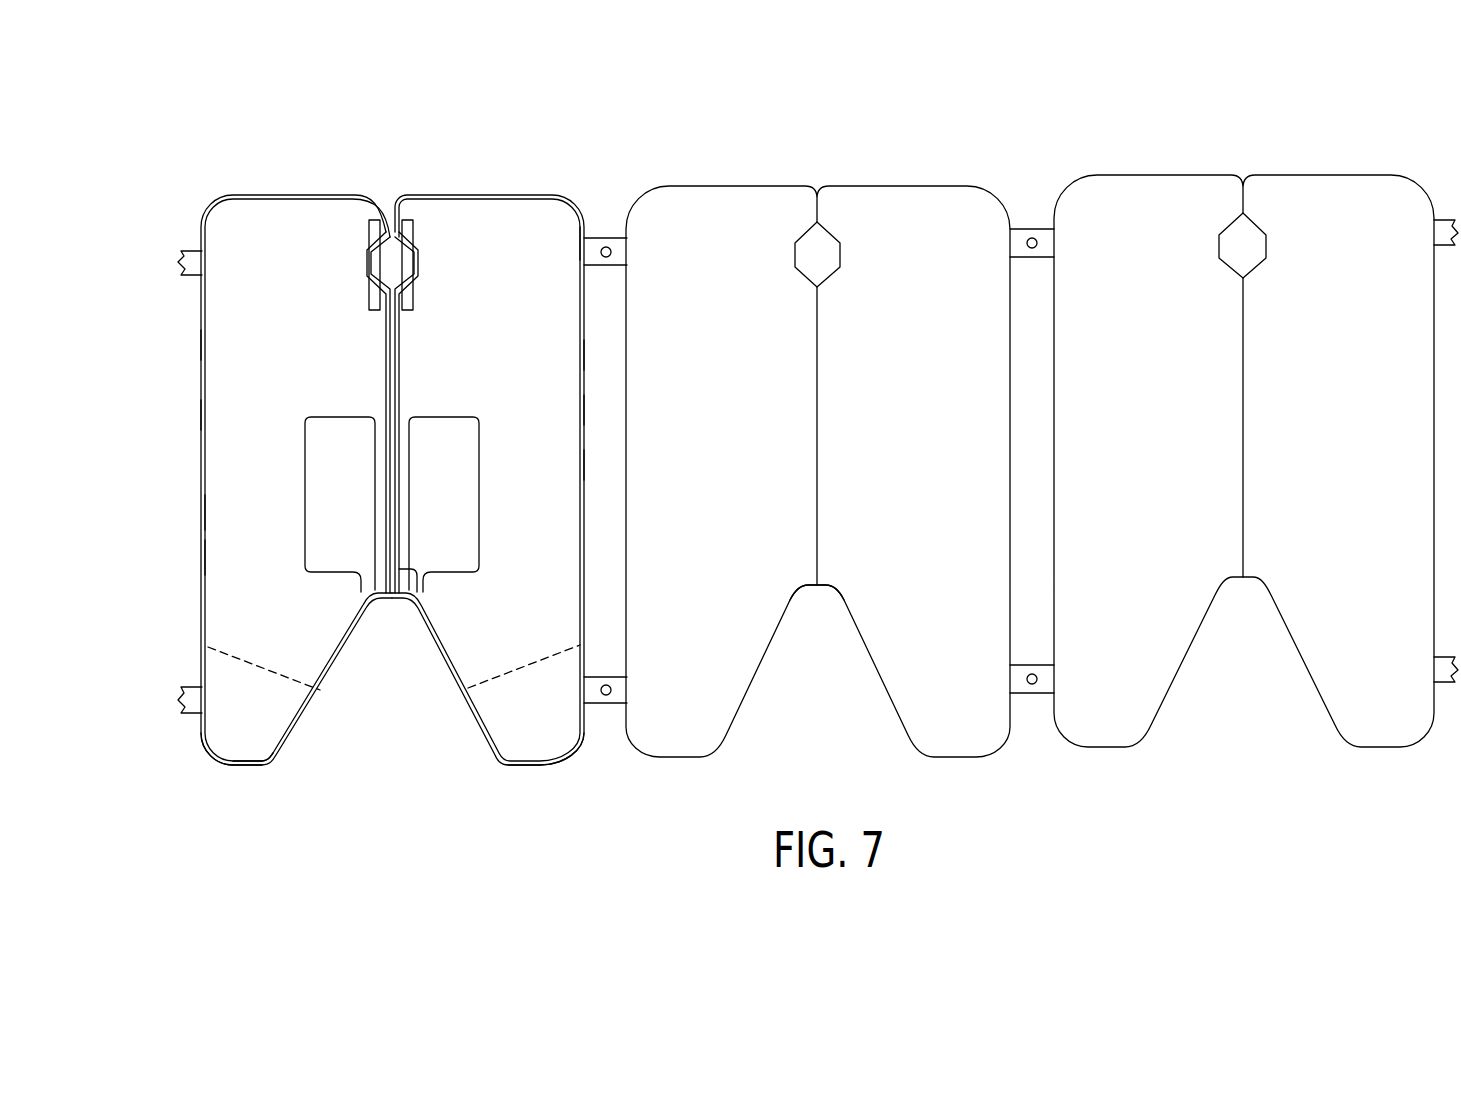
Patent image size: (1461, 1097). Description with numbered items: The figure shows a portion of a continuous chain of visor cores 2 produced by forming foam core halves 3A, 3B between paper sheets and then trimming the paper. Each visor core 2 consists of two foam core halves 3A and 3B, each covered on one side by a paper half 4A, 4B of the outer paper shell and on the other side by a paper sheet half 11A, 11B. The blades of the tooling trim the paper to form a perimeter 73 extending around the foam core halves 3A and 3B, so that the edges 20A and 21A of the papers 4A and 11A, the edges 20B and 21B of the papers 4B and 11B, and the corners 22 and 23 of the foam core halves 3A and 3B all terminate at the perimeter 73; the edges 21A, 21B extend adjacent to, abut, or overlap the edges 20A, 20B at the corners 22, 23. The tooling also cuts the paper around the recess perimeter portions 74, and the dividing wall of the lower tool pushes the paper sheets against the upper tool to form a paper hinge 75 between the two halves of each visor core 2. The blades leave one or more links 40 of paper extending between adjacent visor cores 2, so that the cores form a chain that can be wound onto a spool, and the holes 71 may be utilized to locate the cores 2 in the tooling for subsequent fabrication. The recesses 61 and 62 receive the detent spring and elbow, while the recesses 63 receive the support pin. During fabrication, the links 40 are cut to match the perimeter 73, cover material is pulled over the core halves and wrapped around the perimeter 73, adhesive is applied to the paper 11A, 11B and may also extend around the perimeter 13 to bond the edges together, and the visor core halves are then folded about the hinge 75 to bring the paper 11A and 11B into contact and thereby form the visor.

The visor core 2 is at (396, 186).
The foam core half 3A is at (242, 230).
The foam core half 3B is at (511, 235).
The paper half 4A is at (237, 768).
The paper half 4B is at (496, 758).
The paper sheet half 11A is at (235, 555).
The paper sheet half 11B is at (553, 232).
The perimeter 13 is at (247, 664).
The edge of paper half 20A is at (201, 420).
The edge of paper half 20B is at (585, 408).
The edge of paper sheet half 21A is at (201, 353).
The edge of paper sheet half 21B is at (584, 355).
The corner of foam core half 22 is at (205, 513).
The corner of foam core half 23 is at (585, 466).
The link 40 is at (600, 247).
The recess 61 is at (337, 563).
The recess 62 is at (453, 563).
The recess 63 is at (371, 298).
The hole 71 is at (605, 242).
The perimeter 73 is at (260, 768).
The recess perimeter portion 74 is at (373, 263).
The paper hinge 75 is at (415, 598).